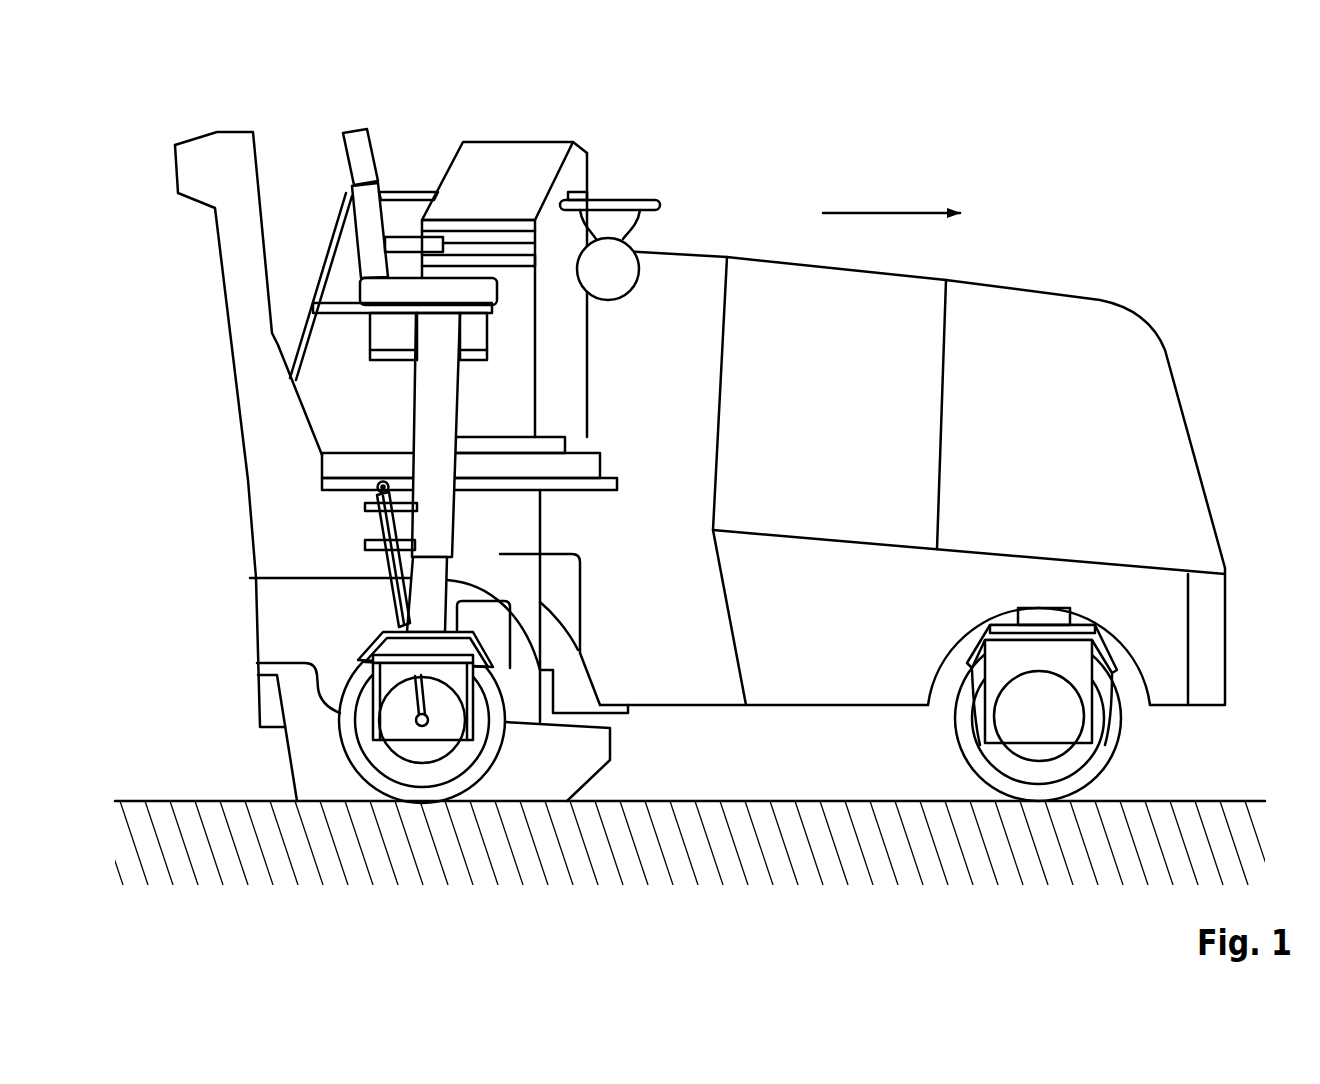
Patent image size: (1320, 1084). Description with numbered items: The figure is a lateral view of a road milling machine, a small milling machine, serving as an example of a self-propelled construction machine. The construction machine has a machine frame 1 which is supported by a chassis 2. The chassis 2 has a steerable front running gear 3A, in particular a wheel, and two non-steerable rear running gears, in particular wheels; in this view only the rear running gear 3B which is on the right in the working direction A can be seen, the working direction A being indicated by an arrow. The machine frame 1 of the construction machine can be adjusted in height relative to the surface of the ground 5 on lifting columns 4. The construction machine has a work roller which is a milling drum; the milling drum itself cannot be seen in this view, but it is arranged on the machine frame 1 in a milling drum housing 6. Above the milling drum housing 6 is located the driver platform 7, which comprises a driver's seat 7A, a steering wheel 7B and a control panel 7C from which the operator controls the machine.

The machine frame 1 is at (1118, 628).
The chassis 2 is at (345, 672).
The front running gear 3A is at (1103, 745).
The rear running gear 3B is at (415, 792).
The lifting columns 4 is at (428, 406).
The ground 5 is at (982, 876).
The milling drum housing 6 is at (265, 595).
The driver platform 7 is at (475, 239).
The driver's seat 7A is at (358, 136).
The steering wheel 7B is at (632, 203).
The control panel 7C is at (508, 160).
The working direction A is at (891, 213).